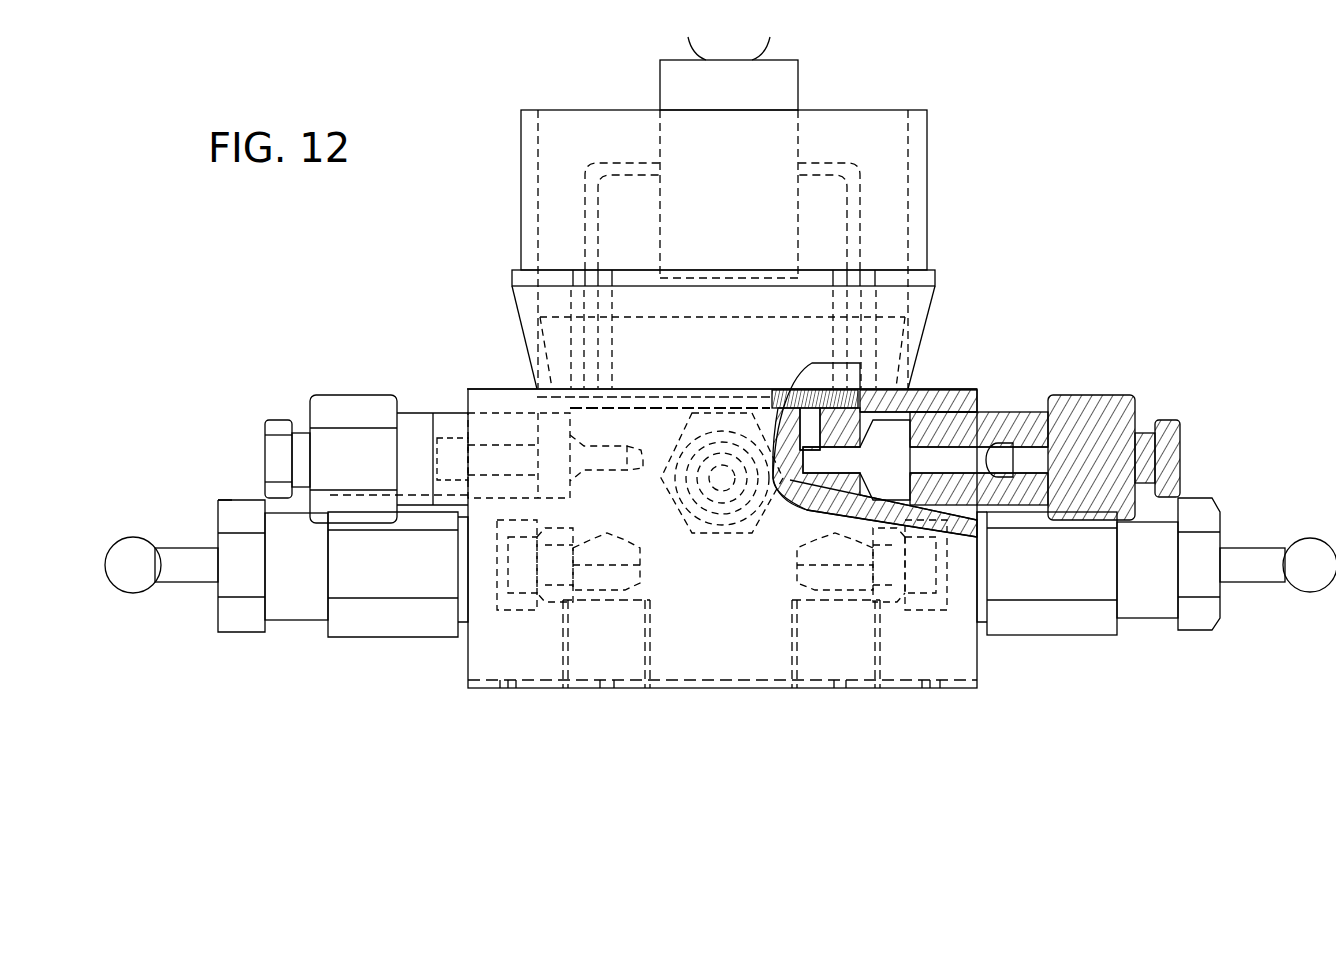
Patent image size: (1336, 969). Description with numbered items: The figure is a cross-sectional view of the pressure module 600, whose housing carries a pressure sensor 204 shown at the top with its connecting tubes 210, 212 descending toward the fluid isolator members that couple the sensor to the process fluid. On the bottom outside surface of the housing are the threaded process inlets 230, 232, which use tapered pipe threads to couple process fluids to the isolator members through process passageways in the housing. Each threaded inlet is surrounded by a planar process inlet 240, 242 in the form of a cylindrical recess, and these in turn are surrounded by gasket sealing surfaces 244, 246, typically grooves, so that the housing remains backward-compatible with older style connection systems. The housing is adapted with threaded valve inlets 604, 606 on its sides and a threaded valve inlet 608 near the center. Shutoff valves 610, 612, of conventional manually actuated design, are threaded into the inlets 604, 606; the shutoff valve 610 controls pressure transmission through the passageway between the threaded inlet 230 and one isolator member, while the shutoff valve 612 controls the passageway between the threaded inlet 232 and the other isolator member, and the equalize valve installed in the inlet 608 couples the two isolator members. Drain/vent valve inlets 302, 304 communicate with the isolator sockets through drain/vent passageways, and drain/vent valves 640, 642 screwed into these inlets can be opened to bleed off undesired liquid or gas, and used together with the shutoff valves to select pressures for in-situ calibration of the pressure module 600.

The pressure module 600 is at (1095, 250).
The pressure sensor 204 is at (756, 96).
The tube 210 is at (633, 160).
The tube 212 is at (823, 160).
The drain/vent valve inlet 304 is at (505, 413).
The drain/vent valve inlet 302 is at (928, 415).
The drain/vent valve 640 is at (1058, 397).
The drain/vent valve 642 is at (362, 393).
The threaded valve inlet 608 is at (688, 527).
The threaded valve inlet 606 is at (508, 612).
The threaded valve inlet 604 is at (935, 612).
The threaded process inlet 232 is at (563, 658).
The threaded process inlet 230 is at (883, 648).
The shutoff valve 612 is at (300, 617).
The shutoff valve 610 is at (1160, 620).
The gasket sealing surface 246 is at (510, 690).
The planar process inlet 242 is at (607, 690).
The planar process inlet 240 is at (840, 690).
The gasket sealing surface 244 is at (930, 690).